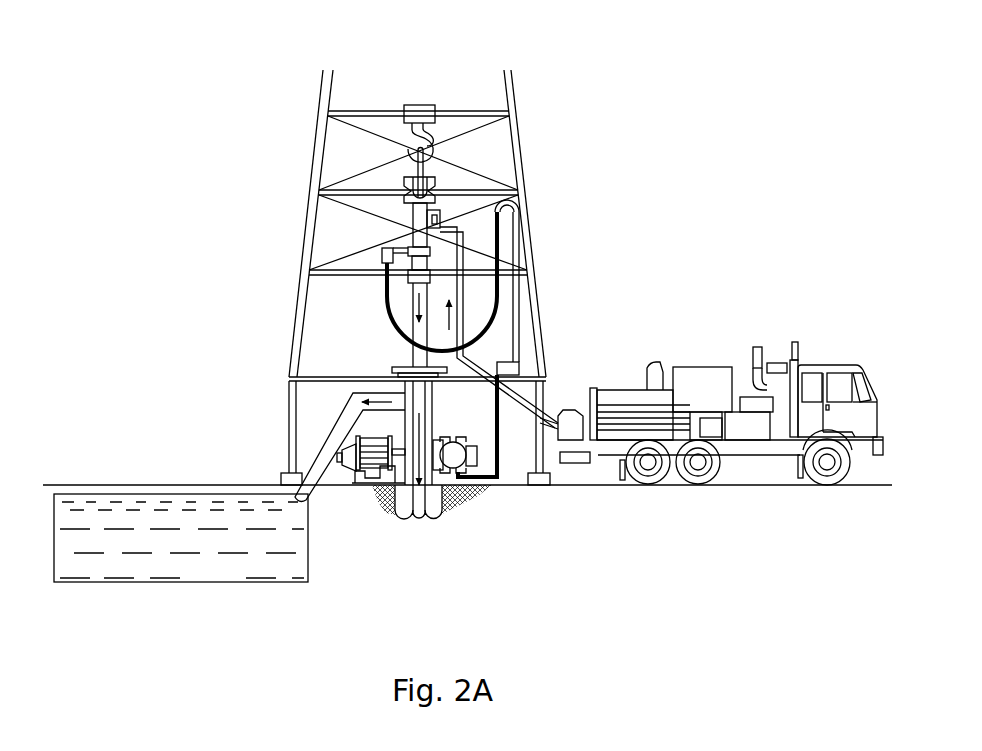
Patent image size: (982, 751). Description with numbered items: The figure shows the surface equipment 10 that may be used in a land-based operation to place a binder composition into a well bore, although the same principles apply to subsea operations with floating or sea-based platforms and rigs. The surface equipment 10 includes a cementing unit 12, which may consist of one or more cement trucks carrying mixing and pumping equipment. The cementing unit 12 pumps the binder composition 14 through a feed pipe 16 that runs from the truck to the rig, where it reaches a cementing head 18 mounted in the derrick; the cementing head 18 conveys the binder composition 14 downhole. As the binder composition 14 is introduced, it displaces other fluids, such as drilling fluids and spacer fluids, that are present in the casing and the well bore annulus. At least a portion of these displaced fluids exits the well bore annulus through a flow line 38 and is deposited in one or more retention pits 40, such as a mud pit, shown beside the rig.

The surface equipment 10 is at (656, 118).
The cementing unit 12 is at (746, 464).
The binder composition 14 is at (412, 305).
The feed pipe 16 is at (513, 395).
The cementing head 18 is at (456, 177).
The flow line 38 is at (330, 437).
The retention pit 40 is at (187, 585).